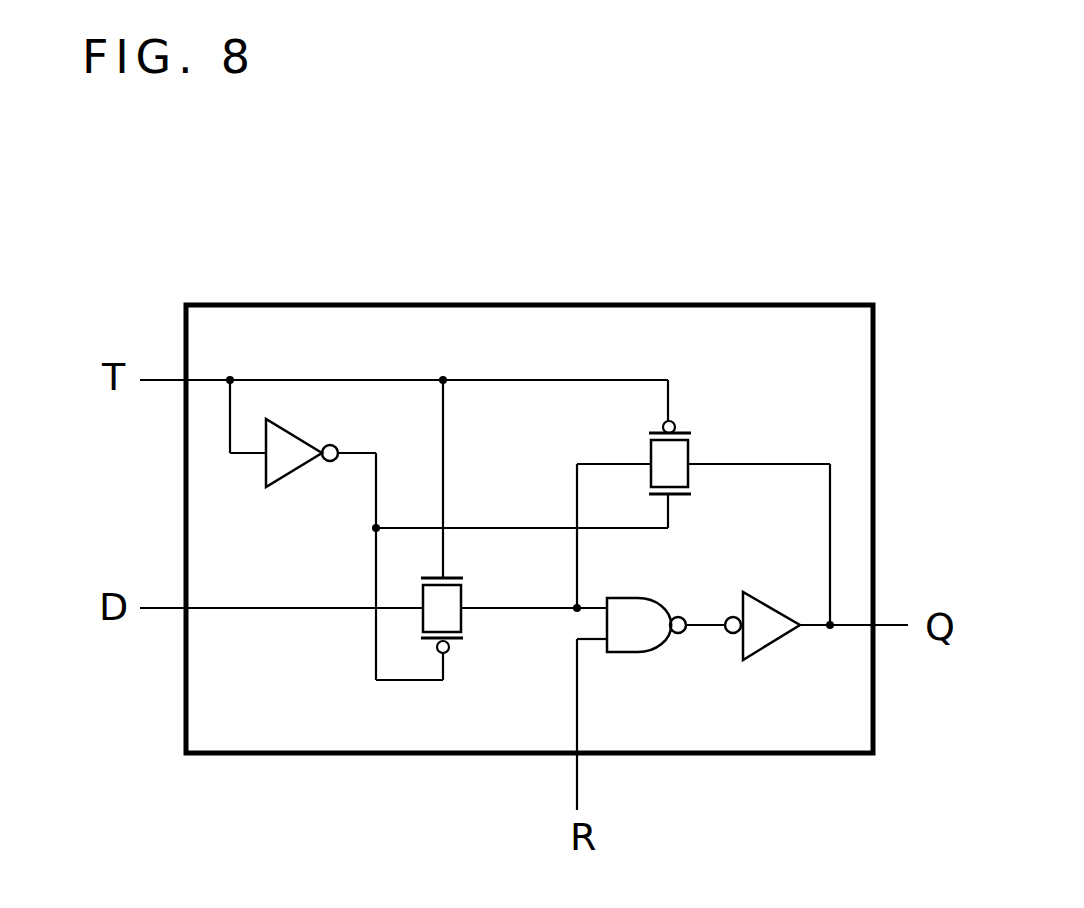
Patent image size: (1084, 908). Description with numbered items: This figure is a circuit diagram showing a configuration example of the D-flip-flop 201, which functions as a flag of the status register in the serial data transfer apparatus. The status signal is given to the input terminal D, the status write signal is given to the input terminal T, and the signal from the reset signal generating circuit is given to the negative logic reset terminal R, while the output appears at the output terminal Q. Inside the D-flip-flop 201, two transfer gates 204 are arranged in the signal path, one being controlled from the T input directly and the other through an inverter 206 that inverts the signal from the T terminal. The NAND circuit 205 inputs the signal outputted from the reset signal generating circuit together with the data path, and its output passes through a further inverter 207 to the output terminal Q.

The D-flip-flop 201 is at (776, 300).
The transfer gate 204 is at (462, 620).
The NAND circuit 205 is at (633, 653).
The inverter 206 is at (297, 468).
The inverter 207 is at (778, 645).